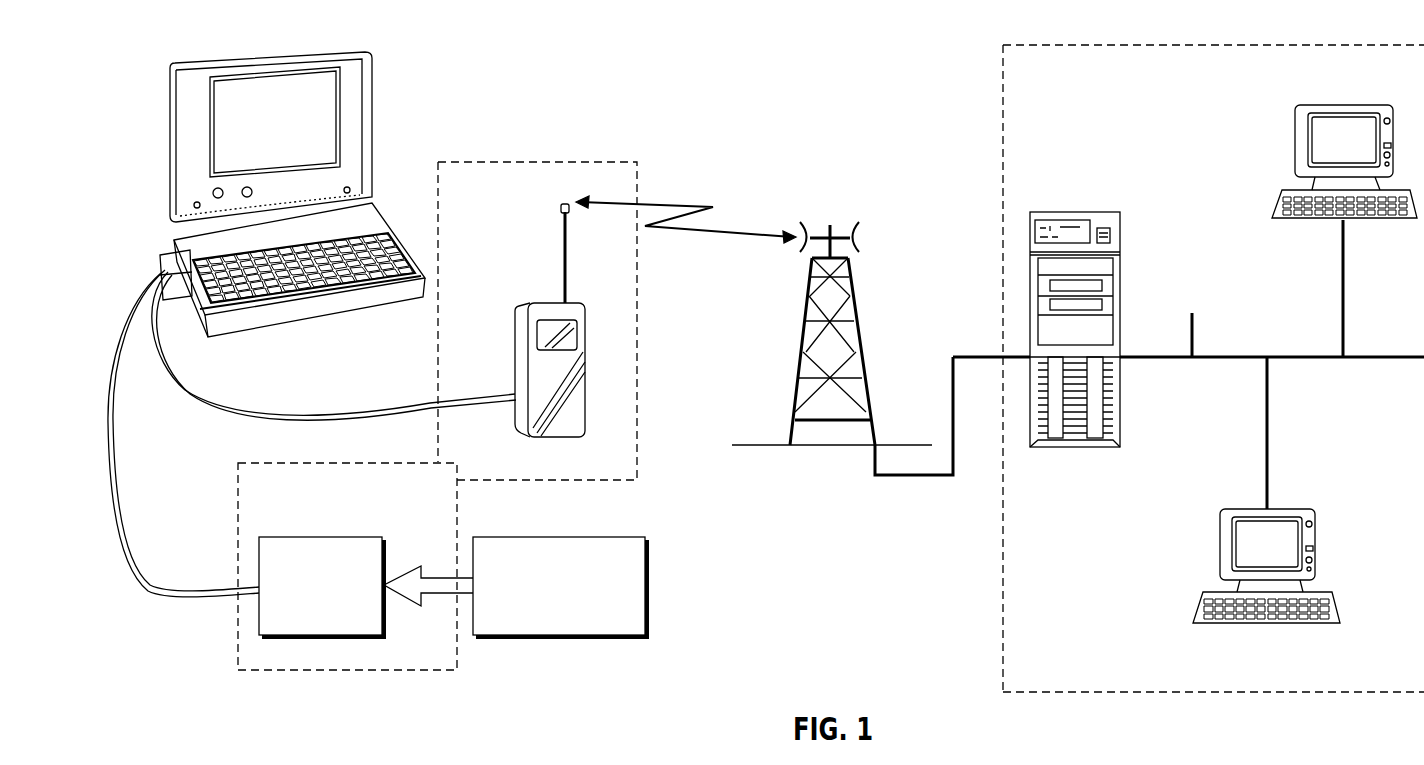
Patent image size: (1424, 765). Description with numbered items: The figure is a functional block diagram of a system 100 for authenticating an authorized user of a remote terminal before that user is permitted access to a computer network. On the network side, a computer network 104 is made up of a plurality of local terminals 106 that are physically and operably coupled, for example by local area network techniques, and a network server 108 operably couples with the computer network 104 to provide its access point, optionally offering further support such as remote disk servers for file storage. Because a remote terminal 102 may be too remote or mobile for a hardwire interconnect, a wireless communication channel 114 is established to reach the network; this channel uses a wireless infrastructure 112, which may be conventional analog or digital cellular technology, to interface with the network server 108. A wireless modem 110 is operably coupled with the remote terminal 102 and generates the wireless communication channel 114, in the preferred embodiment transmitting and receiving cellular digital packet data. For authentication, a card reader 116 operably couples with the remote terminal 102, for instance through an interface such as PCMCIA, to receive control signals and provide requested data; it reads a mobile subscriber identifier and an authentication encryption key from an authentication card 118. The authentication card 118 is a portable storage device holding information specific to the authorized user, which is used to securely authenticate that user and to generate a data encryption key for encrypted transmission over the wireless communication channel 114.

The system 100 is at (541, 68).
The remote terminal 102 is at (362, 117).
The computer network 104 is at (1003, 582).
The local terminals 106 is at (1302, 140).
The network server 108 is at (1070, 212).
The wireless modem 110 is at (527, 302).
The wireless infrastructure 112 is at (797, 365).
The wireless communication channel 114 is at (750, 232).
The card reader 116 is at (325, 545).
The authentication card 118 is at (633, 594).